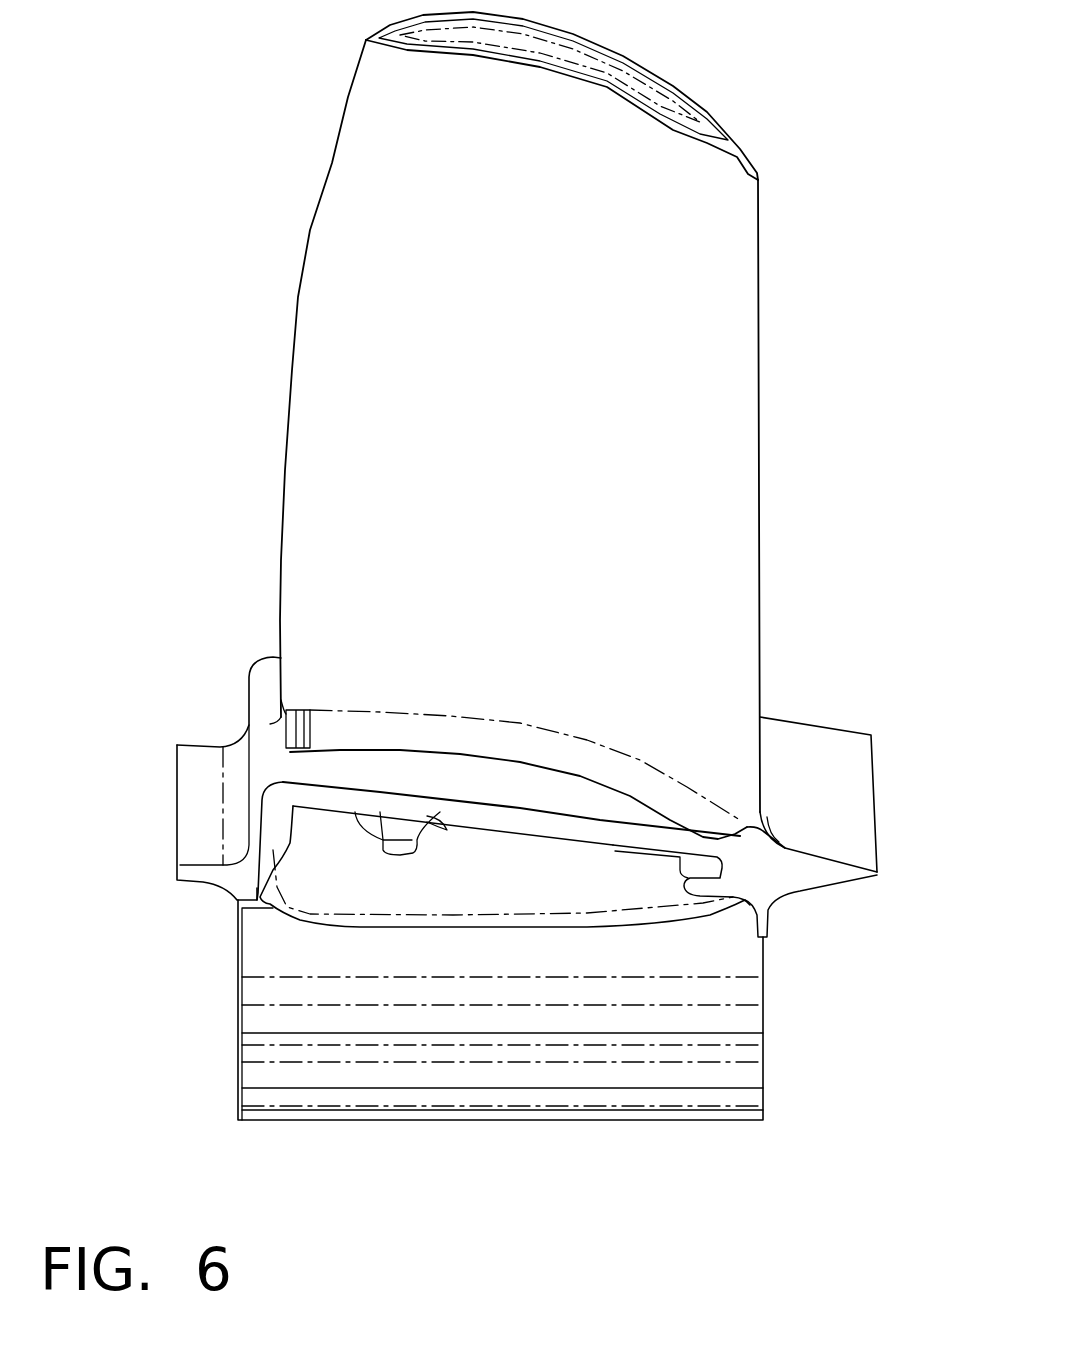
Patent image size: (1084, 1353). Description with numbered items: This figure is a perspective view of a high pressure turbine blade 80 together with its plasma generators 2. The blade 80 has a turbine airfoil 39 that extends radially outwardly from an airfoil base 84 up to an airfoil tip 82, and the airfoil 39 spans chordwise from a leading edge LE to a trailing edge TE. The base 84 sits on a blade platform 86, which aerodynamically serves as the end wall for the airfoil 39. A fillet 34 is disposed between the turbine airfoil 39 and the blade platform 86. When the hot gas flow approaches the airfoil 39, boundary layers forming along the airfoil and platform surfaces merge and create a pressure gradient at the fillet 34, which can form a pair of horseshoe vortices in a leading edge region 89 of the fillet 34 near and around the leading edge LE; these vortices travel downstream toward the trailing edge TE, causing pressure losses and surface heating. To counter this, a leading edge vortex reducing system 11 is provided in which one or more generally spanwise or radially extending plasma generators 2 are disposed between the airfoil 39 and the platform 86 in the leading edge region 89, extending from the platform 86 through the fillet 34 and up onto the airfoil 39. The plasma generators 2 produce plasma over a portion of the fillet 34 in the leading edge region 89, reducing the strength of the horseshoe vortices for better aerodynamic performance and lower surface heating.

The plasma generator 2 is at (310, 728).
The leading edge vortex reducing system 11 is at (262, 712).
The fillet 34 is at (423, 723).
The turbine airfoil 39 is at (273, 378).
The high pressure turbine blade 80 is at (528, 412).
The airfoil tip 82 is at (677, 133).
The airfoil base 84 is at (577, 768).
The blade platform 86 is at (857, 797).
The leading edge region 89 is at (293, 713).
The leading edge LE is at (293, 342).
The trailing edge TE is at (762, 473).